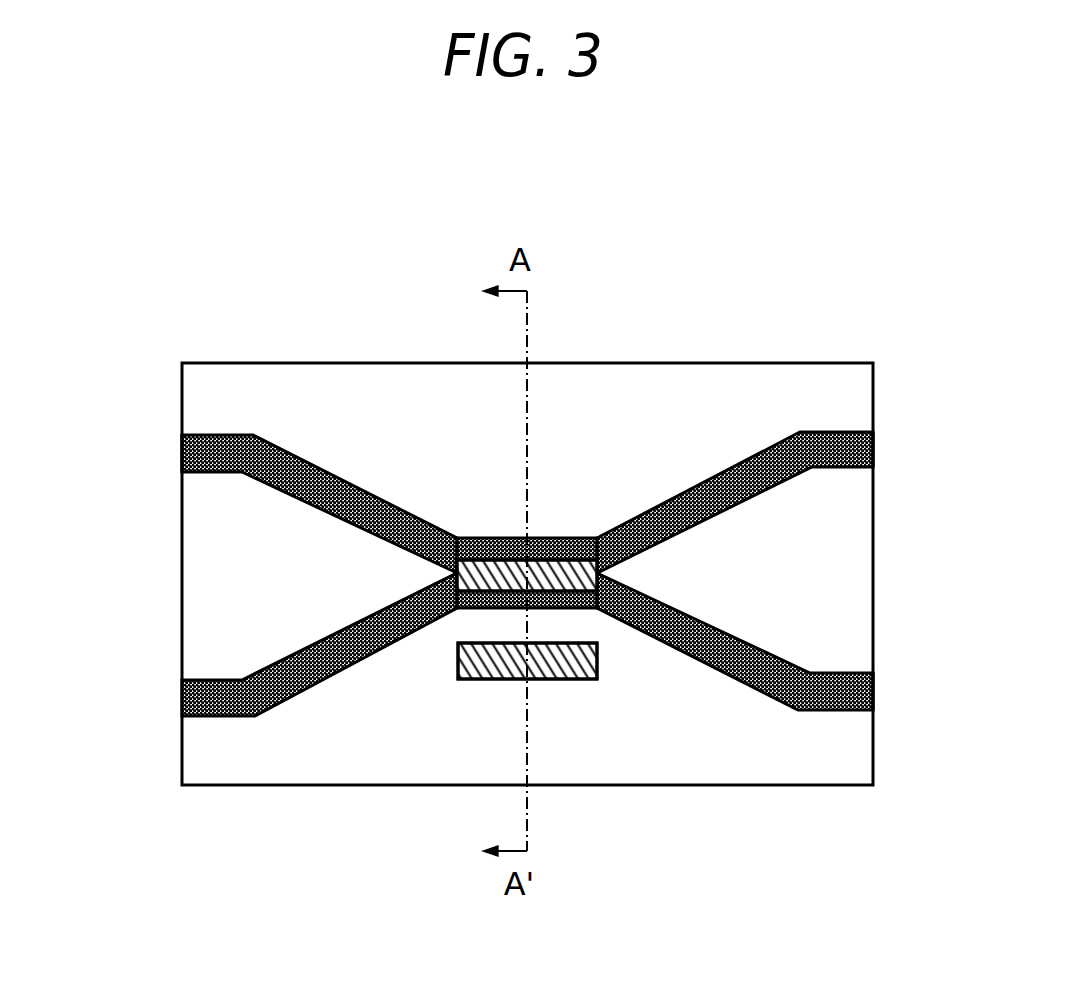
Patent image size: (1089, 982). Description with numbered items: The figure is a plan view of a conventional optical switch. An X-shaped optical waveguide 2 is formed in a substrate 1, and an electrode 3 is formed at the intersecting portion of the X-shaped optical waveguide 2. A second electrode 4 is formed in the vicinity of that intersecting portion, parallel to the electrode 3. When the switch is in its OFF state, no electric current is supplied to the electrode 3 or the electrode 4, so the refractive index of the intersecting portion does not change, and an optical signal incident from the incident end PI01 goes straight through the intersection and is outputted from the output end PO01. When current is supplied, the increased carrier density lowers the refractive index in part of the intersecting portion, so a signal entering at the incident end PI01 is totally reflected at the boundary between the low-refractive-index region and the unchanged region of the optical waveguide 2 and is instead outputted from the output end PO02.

The substrate 1 is at (358, 362).
The X-shaped optical waveguide 2 is at (753, 464).
The electrode 3 is at (508, 572).
The electrode 4 is at (553, 679).
The incident end PI01 is at (182, 455).
The output end PO01 is at (873, 692).
The output end PO02 is at (873, 443).